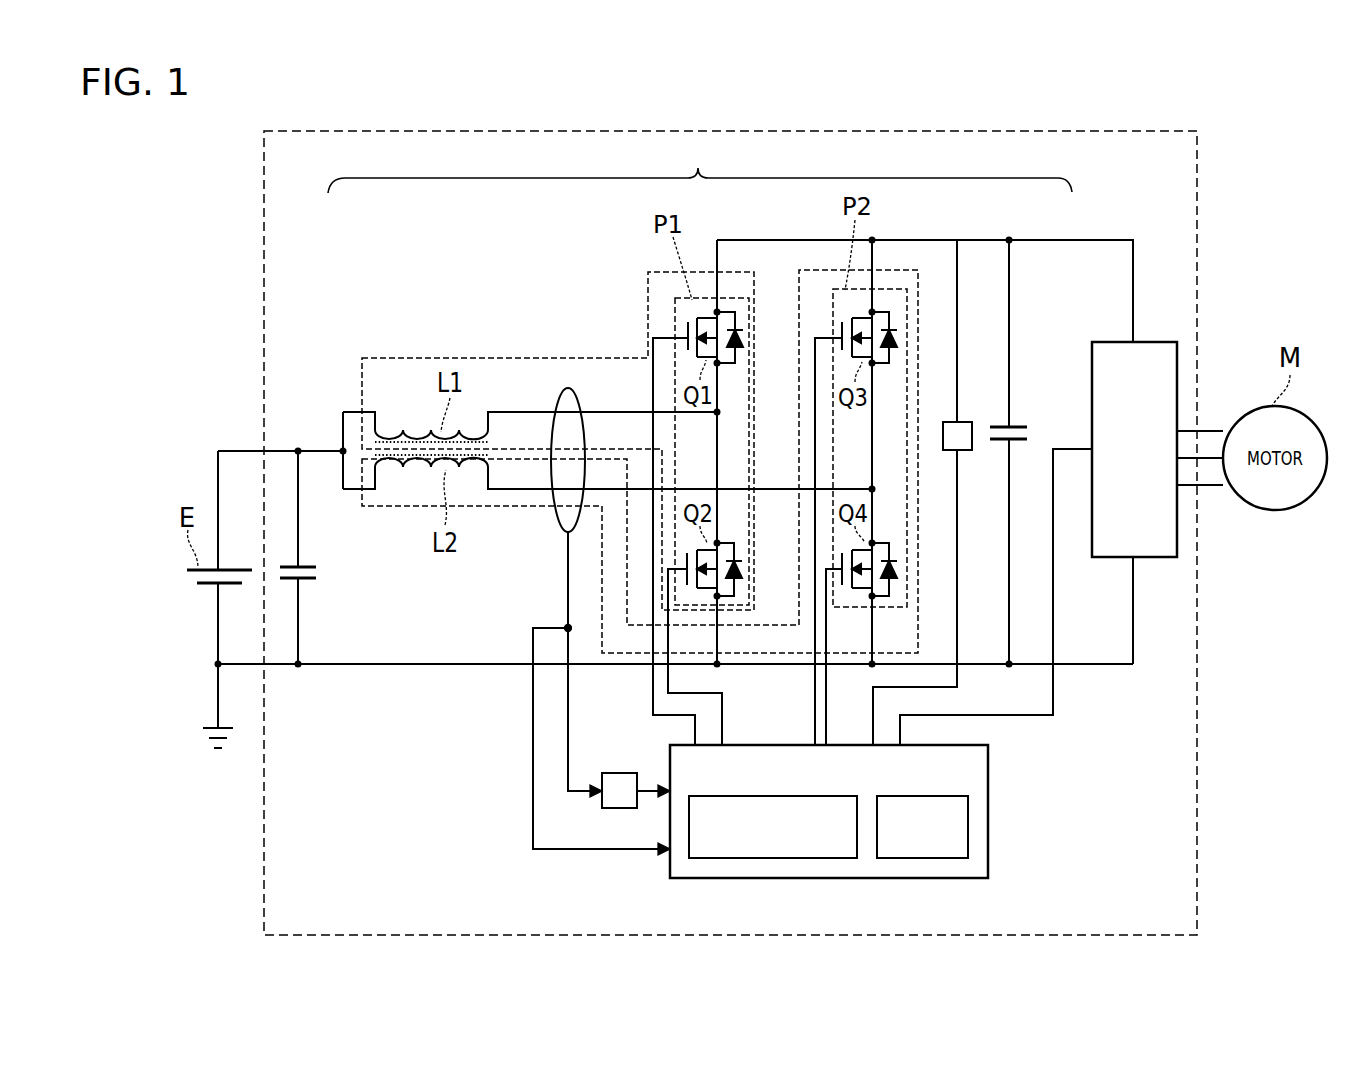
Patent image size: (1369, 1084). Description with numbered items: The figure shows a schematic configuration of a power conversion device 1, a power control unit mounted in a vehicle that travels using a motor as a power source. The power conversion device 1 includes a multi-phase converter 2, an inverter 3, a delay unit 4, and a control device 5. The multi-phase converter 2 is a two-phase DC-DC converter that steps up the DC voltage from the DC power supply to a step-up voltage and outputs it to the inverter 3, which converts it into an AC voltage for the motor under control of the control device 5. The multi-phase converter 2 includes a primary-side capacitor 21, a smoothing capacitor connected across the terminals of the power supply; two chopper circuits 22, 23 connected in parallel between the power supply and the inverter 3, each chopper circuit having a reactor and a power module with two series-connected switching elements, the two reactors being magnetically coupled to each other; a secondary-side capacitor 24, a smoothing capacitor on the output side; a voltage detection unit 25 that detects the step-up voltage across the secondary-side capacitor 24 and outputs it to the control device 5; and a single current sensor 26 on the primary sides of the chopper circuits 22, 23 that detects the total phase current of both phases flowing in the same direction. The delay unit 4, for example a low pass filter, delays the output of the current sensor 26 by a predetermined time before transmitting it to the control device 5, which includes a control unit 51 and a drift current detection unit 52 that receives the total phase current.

The power conversion device 1 is at (1203, 137).
The multi-phase converter 2 is at (700, 165).
The inverter 3 is at (1150, 342).
The delay unit 4 is at (618, 773).
The control device 5 is at (829, 807).
The primary-side capacitor 21 is at (312, 560).
The chopper circuit 22 is at (490, 357).
The chopper circuit 23 is at (372, 428).
The secondary-side capacitor 24 is at (1012, 426).
The voltage detection unit 25 is at (958, 420).
The current sensor 26 is at (566, 390).
The control unit 51 is at (920, 858).
The drift current detection unit 52 is at (770, 858).